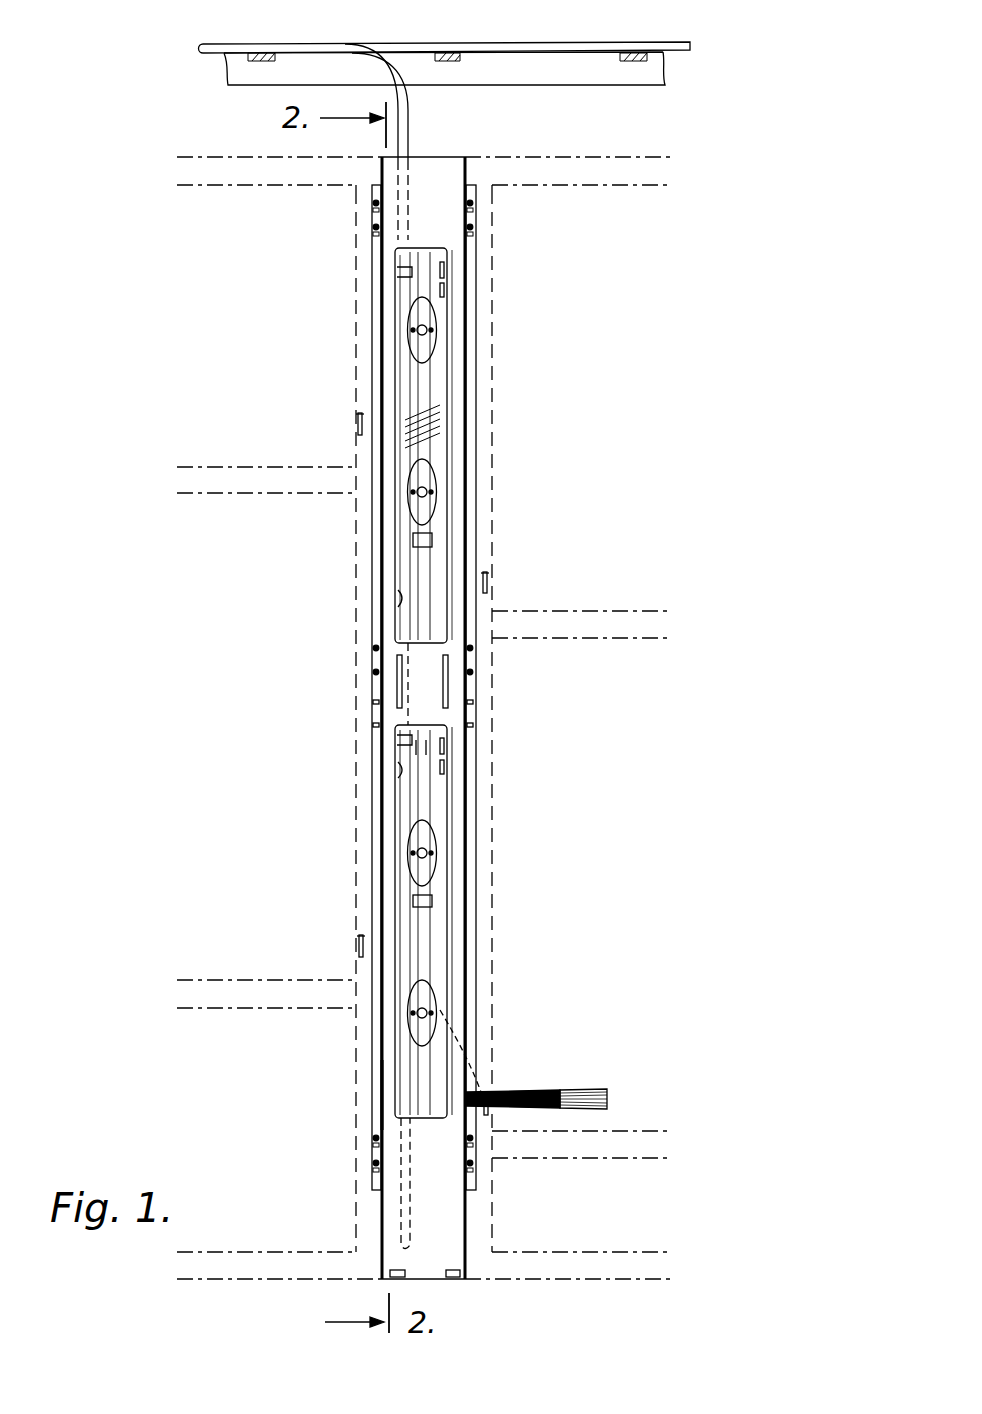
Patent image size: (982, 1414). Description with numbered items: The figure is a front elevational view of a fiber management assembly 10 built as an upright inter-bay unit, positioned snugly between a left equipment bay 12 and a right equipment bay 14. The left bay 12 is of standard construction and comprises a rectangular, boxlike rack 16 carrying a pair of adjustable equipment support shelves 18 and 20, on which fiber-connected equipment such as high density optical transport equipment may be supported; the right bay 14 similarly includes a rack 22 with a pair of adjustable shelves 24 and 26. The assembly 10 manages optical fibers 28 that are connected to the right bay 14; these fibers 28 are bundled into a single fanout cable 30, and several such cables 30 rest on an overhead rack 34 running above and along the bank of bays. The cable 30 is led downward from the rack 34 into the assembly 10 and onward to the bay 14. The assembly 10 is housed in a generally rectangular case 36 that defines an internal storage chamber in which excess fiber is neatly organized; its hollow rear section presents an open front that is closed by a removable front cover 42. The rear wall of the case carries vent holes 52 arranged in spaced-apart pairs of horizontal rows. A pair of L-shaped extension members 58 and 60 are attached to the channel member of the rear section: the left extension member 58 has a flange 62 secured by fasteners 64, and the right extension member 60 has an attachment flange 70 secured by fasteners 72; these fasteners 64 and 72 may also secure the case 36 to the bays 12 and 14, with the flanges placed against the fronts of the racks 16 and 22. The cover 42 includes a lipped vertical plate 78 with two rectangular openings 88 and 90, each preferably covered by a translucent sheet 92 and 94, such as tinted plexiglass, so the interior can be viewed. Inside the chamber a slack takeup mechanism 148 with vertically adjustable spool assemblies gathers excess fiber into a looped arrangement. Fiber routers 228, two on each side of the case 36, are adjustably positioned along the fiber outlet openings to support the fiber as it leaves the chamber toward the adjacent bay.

The fiber management assembly 10 is at (460, 150).
The left equipment bay 12 is at (193, 460).
The right equipment bay 14 is at (650, 600).
The rack 16 is at (205, 178).
The equipment support shelf 18 is at (250, 490).
The equipment support shelf 20 is at (253, 982).
The rack 22 is at (645, 1258).
The adjustable shelf 24 is at (593, 630).
The adjustable shelf 26 is at (642, 1153).
The optical fibers 28 is at (593, 1088).
The cable 30 is at (225, 50).
The overhead rack 34 is at (663, 73).
The case 36 is at (383, 1245).
The front cover 42 is at (433, 1273).
The vent holes 52 is at (444, 270).
The left extension member 58 is at (372, 1026).
The right extension member 60 is at (476, 898).
The flange 62 is at (380, 1095).
The fasteners 64 is at (375, 672).
The attachment flange 70 is at (468, 342).
The fasteners 72 is at (470, 672).
The vertical plate 78 is at (418, 163).
The rectangular opening 88 is at (398, 598).
The rectangular opening 90 is at (398, 770).
The translucent sheet 92 is at (440, 413).
The translucent sheet 94 is at (444, 803).
The slack takeup mechanism 148 is at (408, 564).
The fiber routers 228 is at (358, 413).